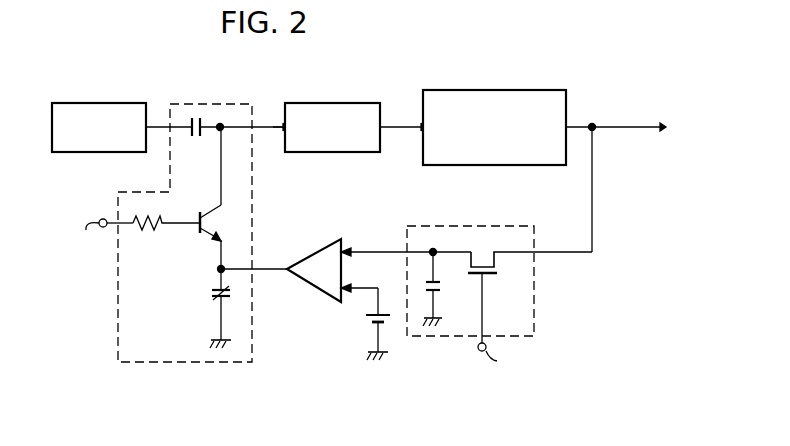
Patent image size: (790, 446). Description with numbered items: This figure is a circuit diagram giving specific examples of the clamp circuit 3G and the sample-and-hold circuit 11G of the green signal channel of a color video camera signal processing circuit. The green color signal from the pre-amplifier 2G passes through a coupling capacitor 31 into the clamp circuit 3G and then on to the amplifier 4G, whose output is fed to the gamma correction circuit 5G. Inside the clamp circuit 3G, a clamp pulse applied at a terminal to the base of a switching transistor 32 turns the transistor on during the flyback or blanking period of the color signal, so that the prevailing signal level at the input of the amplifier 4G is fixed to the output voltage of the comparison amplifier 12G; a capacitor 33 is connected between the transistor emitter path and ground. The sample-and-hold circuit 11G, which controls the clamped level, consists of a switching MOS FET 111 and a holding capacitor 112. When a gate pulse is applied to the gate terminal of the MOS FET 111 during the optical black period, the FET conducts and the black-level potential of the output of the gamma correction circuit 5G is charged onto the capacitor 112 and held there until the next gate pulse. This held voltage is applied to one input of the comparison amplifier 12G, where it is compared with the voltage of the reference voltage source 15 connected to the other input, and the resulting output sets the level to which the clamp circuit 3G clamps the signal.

The pre-amplifier 2G is at (91, 103).
The clamp circuit 3G is at (170, 362).
The amplifier 4G is at (322, 103).
The gamma correction circuit 5G is at (477, 90).
The sample-and-hold circuit 11G is at (586, 329).
The comparison amplifier 12G is at (313, 253).
The reference voltage source 15 is at (368, 318).
The coupling capacitor 31 is at (199, 139).
The switching transistor 32 is at (224, 228).
The capacitor 33 is at (211, 291).
The switching MOS FET 111 is at (491, 277).
The holding capacitor 112 is at (443, 284).